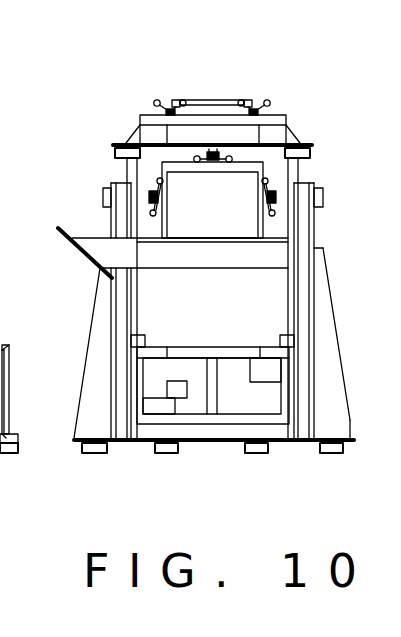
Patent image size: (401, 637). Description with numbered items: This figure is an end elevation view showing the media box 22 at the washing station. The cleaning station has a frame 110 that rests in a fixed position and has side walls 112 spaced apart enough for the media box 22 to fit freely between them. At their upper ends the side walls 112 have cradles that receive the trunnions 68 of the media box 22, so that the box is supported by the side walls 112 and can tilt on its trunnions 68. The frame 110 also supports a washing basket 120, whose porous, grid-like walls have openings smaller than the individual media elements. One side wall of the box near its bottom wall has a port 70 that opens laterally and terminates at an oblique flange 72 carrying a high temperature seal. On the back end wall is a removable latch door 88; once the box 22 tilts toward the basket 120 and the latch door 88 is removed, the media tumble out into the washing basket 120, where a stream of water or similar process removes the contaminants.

The media box 22 is at (140, 110).
The latch door 88 is at (218, 195).
The trunnions 68 is at (105, 195).
The port 70 is at (97, 240).
The flange 72 is at (71, 240).
The side walls 112 is at (110, 338).
The frame 110 is at (100, 455).
The washing basket 120 is at (195, 368).